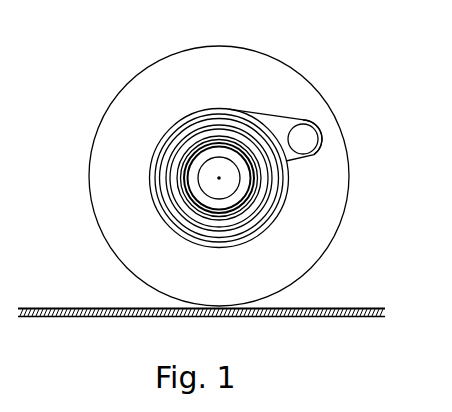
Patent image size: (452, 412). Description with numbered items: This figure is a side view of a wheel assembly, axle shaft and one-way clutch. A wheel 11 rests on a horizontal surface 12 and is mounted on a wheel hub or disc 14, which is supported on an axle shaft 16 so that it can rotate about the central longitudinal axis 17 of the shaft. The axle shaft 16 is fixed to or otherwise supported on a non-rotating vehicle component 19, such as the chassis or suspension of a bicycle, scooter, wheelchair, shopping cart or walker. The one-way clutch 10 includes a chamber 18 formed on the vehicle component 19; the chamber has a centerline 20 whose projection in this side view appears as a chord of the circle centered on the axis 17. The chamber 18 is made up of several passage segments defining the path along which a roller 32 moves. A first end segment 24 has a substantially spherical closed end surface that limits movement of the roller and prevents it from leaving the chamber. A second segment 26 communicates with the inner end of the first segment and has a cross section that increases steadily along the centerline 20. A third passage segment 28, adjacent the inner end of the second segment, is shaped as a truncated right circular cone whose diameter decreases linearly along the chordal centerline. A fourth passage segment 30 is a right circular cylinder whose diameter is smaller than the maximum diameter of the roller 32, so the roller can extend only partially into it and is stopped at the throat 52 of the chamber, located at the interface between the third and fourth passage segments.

The one-way clutch 10 is at (290, 110).
The wheel 11 is at (306, 242).
The horizontal surface 12 is at (343, 318).
The wheel hub or disc 14 is at (193, 153).
The axle shaft 16 is at (219, 178).
The central longitudinal axis 17 is at (219, 178).
The chamber 18 is at (324, 116).
The non-rotating vehicle component 19 is at (190, 187).
The centerline 20 is at (250, 118).
The first end segment 24 is at (319, 137).
The second segment 26 is at (282, 105).
The third passage segment 28 is at (262, 108).
The fourth passage segment 30 is at (223, 142).
The roller 32 is at (315, 157).
The throat 52 is at (240, 112).